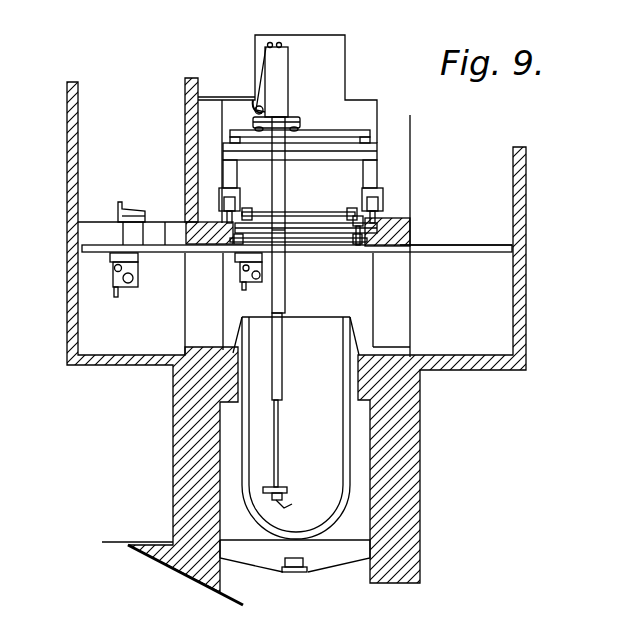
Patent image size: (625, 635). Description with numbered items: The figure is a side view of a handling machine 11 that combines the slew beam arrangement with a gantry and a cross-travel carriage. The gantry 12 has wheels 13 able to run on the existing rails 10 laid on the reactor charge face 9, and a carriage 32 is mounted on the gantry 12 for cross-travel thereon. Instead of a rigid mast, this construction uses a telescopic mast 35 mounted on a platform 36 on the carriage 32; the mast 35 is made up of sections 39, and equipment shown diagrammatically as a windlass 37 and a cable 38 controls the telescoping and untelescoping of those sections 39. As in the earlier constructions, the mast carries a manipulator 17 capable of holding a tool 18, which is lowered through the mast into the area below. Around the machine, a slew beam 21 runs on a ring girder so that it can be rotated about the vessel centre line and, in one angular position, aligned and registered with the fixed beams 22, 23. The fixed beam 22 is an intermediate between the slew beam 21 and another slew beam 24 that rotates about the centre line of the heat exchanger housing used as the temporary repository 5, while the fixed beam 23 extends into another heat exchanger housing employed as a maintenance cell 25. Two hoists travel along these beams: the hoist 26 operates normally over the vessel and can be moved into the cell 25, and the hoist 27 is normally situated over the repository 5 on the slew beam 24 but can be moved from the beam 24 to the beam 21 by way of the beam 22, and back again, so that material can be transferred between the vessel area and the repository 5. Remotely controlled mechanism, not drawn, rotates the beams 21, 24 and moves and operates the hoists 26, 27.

The temporary repository 5 is at (85, 305).
The reactor charge face 9 is at (207, 214).
The existing rails 10 is at (374, 219).
The handling machine 11 is at (354, 40).
The gantry 12 is at (222, 168).
The wheels 13 is at (235, 203).
The manipulator 17 is at (288, 490).
The tool 18 is at (292, 508).
The slew beam 21 is at (340, 249).
The fixed beam 22 is at (195, 260).
The fixed beam 23 is at (444, 245).
The slew beam 24 is at (166, 218).
The maintenance cell 25 is at (497, 272).
The hoist 26 is at (266, 266).
The hoist 27 is at (141, 268).
The carriage 32 is at (318, 131).
The telescopic mast 35 is at (294, 61).
The platform 36 is at (284, 121).
The windlass 37 is at (255, 98).
The cable 38 is at (258, 63).
The sections 39 is at (292, 215).